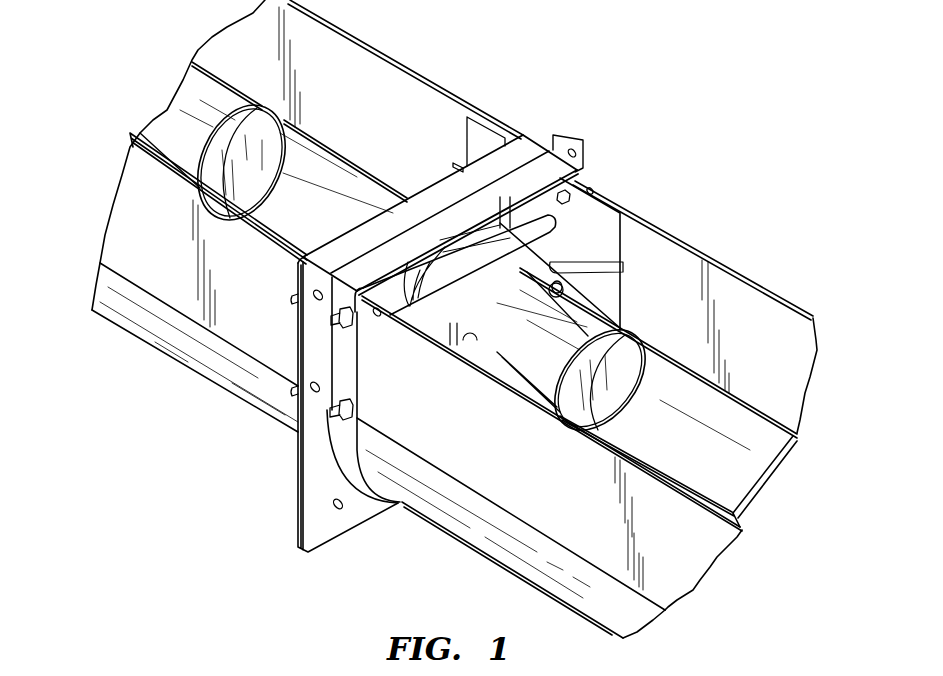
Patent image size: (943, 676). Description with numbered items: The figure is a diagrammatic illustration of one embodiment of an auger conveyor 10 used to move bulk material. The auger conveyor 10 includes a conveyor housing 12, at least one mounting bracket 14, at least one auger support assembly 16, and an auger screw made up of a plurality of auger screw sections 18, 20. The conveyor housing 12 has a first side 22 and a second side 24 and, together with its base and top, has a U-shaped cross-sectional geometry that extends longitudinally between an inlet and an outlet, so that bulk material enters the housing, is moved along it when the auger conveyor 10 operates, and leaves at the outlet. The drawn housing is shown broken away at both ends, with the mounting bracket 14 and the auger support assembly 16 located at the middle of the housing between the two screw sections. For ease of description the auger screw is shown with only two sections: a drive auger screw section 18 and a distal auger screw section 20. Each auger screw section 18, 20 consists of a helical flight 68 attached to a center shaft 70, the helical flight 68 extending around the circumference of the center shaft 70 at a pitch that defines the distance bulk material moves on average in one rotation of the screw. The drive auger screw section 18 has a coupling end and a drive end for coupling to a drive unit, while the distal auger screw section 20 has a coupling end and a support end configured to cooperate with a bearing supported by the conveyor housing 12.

The auger conveyor 10 is at (726, 149).
The conveyor housing 12 is at (757, 284).
The mounting bracket 14 is at (603, 194).
The auger support assembly 16 is at (506, 262).
The drive auger screw section 18 is at (717, 507).
The distal auger screw section 20 is at (137, 134).
The first side 22 is at (703, 253).
The second side 24 is at (707, 553).
The helical flight 68 is at (245, 133).
The center shaft 70 is at (181, 167).